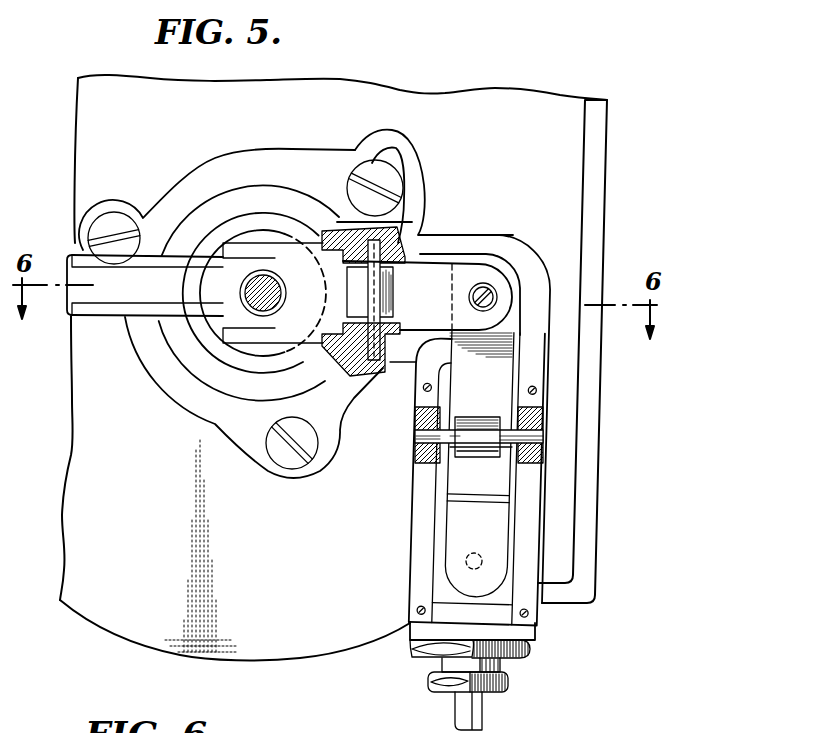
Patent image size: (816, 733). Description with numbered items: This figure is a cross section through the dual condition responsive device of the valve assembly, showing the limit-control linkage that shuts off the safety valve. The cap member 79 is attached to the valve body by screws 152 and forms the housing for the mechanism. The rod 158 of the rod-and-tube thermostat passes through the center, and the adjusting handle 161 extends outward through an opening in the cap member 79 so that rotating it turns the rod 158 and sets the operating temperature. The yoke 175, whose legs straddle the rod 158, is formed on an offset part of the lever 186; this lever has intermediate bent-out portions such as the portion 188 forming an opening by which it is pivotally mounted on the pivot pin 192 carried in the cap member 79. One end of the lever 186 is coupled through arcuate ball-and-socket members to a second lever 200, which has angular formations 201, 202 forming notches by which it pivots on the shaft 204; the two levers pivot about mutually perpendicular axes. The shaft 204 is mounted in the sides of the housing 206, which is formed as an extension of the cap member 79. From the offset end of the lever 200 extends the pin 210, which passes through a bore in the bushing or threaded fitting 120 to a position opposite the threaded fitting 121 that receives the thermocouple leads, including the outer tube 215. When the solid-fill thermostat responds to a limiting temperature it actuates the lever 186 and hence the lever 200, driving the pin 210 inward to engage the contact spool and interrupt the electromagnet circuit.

The cap member 79 is at (258, 168).
The threaded fitting 120 is at (520, 652).
The threaded fitting 121 is at (503, 687).
The screws 152 is at (110, 223).
The rod 158 is at (245, 293).
The adjusting handle 161 is at (87, 297).
The yoke 175 is at (256, 345).
The lever 186 is at (450, 262).
The angular bent out portion 188 is at (393, 312).
The pivot pin 192 is at (413, 221).
The lever 200 is at (529, 375).
The angular formation 201 is at (507, 451).
The angular formation 202 is at (485, 425).
The shaft 204 is at (537, 440).
The housing 206 is at (412, 459).
The pin 210 is at (458, 564).
The outer tube 215 is at (460, 708).